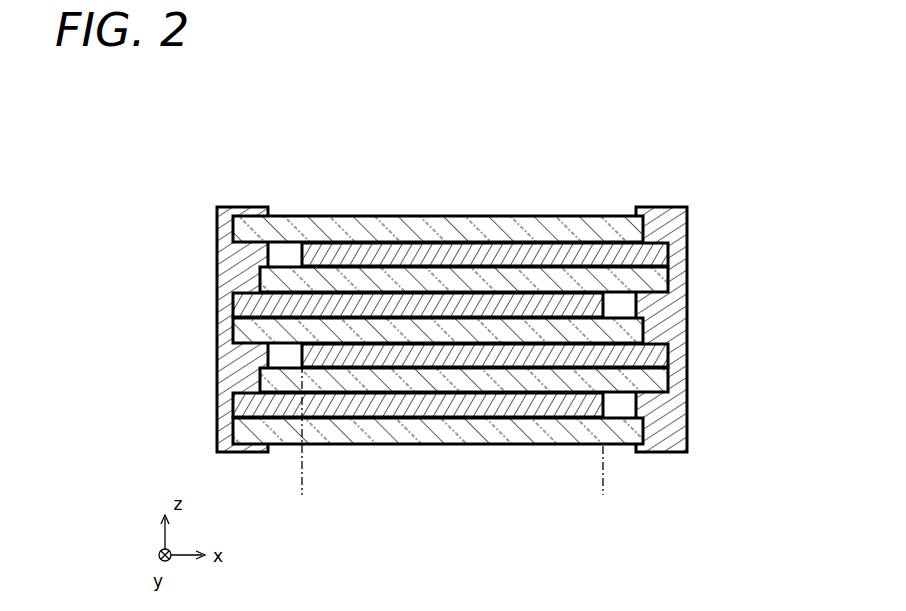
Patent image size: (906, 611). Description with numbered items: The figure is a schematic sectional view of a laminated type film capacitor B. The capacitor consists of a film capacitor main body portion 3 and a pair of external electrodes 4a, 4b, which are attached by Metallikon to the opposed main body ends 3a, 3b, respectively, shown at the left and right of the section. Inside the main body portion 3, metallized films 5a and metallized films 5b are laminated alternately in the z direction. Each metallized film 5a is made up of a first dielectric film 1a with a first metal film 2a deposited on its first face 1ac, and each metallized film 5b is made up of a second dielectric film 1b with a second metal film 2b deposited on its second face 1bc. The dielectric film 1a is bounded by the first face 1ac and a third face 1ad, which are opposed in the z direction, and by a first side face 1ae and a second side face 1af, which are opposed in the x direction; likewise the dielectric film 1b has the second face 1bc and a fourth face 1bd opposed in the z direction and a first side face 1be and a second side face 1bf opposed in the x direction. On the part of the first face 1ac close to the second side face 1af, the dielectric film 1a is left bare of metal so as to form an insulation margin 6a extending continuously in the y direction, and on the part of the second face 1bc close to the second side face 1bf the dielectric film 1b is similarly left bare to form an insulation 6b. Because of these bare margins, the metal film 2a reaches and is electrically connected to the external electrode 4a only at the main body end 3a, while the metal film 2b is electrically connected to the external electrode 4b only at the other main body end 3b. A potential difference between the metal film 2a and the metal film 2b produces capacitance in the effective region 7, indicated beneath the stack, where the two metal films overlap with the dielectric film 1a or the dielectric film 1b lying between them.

The laminated type film capacitor B is at (642, 68).
The film capacitor main body portion 3 is at (570, 92).
The main body end 3a is at (235, 185).
The main body end 3b is at (669, 185).
The external electrode 4a is at (217, 252).
The external electrode 4b is at (672, 216).
The metallized film 5a is at (418, 141).
The metallized film 5b is at (453, 141).
The first dielectric film 1a is at (425, 427).
The second dielectric film 1b is at (500, 383).
The first metal film 2a is at (360, 410).
The second metal film 2b is at (577, 357).
The insulation margin 6a is at (612, 250).
The insulation 6b is at (290, 258).
The effective region 7 is at (603, 498).
The first face 1ac is at (268, 314).
The third face 1ad is at (262, 348).
The first side face 1ae is at (233, 330).
The second side face 1af is at (648, 325).
The second face 1bc is at (650, 363).
The fourth face 1bd is at (655, 393).
The first side face 1be is at (668, 281).
The second side face 1bf is at (262, 281).